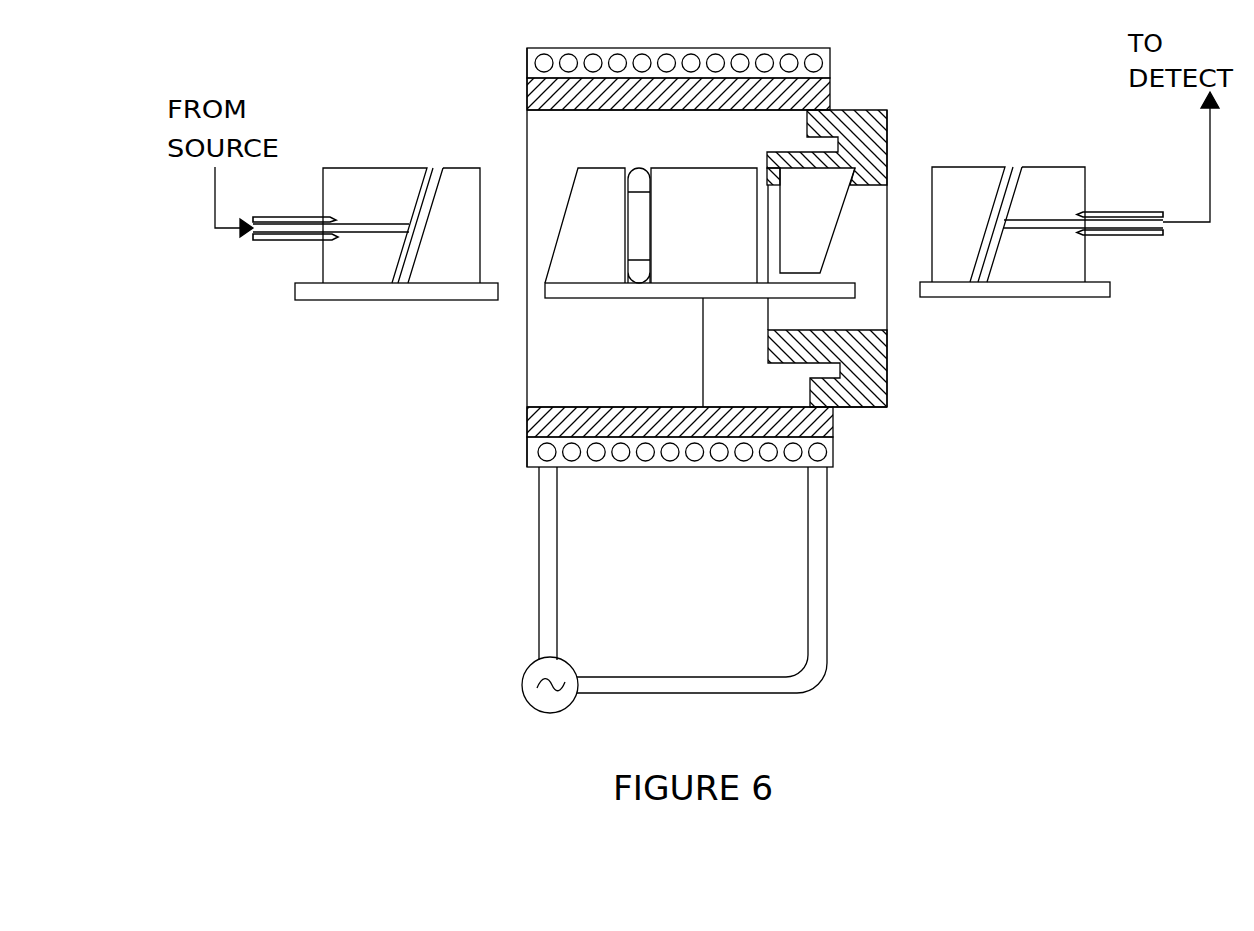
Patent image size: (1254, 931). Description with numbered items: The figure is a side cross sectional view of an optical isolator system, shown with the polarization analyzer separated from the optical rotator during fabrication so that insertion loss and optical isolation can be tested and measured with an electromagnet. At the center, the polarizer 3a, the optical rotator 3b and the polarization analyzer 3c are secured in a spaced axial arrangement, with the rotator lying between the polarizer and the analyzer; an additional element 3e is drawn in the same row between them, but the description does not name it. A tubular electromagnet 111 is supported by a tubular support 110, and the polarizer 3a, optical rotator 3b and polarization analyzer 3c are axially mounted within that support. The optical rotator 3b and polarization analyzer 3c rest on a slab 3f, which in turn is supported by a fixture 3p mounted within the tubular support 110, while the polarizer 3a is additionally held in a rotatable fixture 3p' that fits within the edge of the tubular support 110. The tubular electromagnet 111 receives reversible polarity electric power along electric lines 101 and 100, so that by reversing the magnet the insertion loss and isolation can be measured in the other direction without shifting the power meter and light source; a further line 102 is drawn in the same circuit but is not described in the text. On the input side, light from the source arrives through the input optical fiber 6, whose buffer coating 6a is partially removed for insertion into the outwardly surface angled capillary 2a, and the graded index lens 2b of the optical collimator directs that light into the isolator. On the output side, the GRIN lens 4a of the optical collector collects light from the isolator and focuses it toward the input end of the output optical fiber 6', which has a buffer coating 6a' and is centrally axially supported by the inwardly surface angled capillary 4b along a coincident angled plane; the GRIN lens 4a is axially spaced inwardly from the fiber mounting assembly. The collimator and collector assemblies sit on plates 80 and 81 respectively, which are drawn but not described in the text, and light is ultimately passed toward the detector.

The outwardly surface angled capillary 2a is at (1058, 175).
The graded index lens 2b is at (952, 273).
The polarizer 3a is at (825, 222).
The optical rotator 3b is at (718, 182).
The polarization analyzer 3c is at (590, 193).
The rod lens 3e is at (638, 183).
The slab 3f is at (545, 287).
The fixture 3p is at (663, 257).
The rotatable fixture 3p' is at (852, 133).
The GRIN lens 4a is at (430, 270).
The inwardly surface angled capillary 4b is at (365, 178).
The input optical fiber 6 is at (1092, 198).
The output optical fiber 6' is at (331, 164).
The buffer coating 6a is at (1120, 191).
The buffer coating 6a' is at (295, 149).
The input mounting plate 80 is at (360, 295).
The output mounting plate 81 is at (1107, 293).
The electric line 100 is at (525, 706).
The electric line 101 is at (539, 543).
The lead 102 is at (708, 693).
The tubular support 110 is at (527, 93).
The tubular electromagnet 111 is at (527, 60).